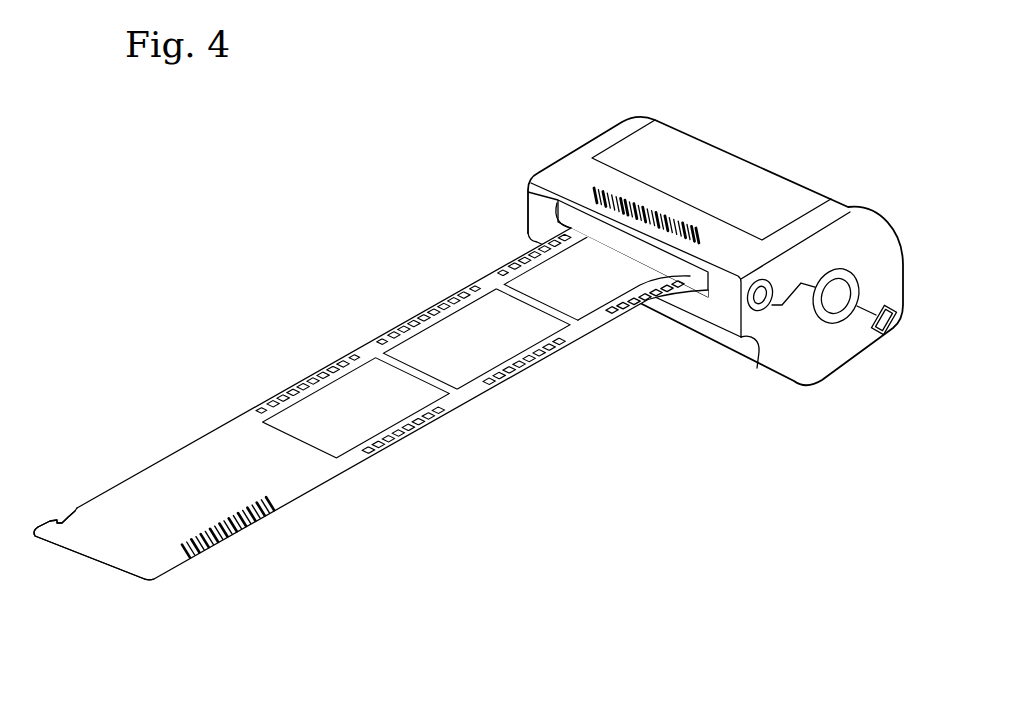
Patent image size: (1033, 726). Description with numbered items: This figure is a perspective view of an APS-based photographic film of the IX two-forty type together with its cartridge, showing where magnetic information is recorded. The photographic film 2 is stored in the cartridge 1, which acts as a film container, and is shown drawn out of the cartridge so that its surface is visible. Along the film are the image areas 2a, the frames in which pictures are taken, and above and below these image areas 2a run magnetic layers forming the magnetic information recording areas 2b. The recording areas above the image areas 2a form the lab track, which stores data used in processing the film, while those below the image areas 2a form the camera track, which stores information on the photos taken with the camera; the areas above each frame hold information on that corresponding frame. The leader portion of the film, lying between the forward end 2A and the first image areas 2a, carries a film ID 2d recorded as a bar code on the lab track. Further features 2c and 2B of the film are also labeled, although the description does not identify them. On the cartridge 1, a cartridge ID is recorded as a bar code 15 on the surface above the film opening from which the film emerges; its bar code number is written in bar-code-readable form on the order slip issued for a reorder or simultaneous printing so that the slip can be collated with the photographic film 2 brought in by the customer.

The cartridge 1 is at (571, 121).
The bar code 15 is at (716, 241).
The photographic film 2 is at (300, 497).
The image areas 2a is at (303, 427).
The magnetic information recording areas 2b is at (422, 317).
The frame indicating holes 2c is at (479, 283).
The film ID 2d is at (245, 539).
The forward end 2A is at (87, 560).
The notch 2B is at (57, 521).